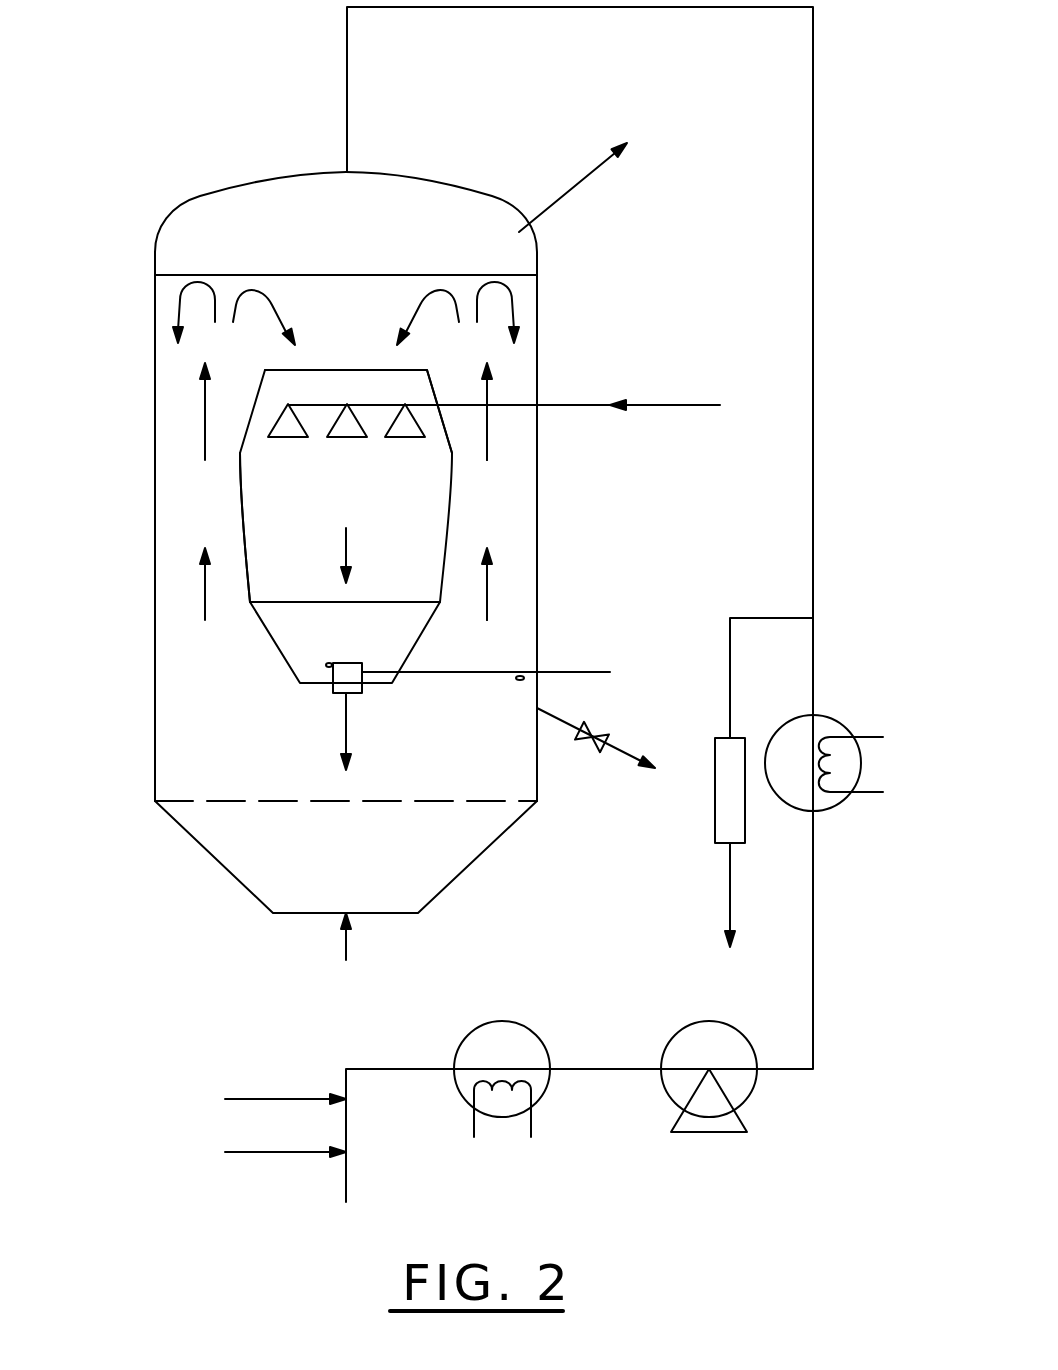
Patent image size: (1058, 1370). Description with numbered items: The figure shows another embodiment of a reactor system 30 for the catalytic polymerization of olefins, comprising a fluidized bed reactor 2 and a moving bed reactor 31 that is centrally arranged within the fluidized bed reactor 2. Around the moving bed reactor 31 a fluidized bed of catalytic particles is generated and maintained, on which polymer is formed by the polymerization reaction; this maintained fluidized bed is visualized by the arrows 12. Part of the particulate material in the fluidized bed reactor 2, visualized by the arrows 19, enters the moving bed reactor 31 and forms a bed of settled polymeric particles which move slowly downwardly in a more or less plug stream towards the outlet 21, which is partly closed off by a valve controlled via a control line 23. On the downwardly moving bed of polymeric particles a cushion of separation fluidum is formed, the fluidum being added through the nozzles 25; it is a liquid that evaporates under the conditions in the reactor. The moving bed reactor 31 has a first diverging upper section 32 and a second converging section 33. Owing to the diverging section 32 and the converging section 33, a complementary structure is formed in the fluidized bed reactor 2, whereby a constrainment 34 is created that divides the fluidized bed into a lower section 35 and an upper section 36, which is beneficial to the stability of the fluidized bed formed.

The reactor system 30 is at (236, 96).
The fluidized bed reactor 2 is at (537, 315).
The arrows 19 is at (430, 303).
The arrows 12 is at (180, 292).
The upper section 36 is at (496, 392).
The first diverging upper section 32 is at (240, 445).
The second converging section 33 is at (243, 518).
The constrainment 34 is at (453, 462).
The moving bed reactor 31 is at (450, 518).
The lower section 35 is at (507, 548).
The nozzles 25 is at (405, 438).
The outlet 21 is at (354, 686).
The control line 23 is at (555, 672).